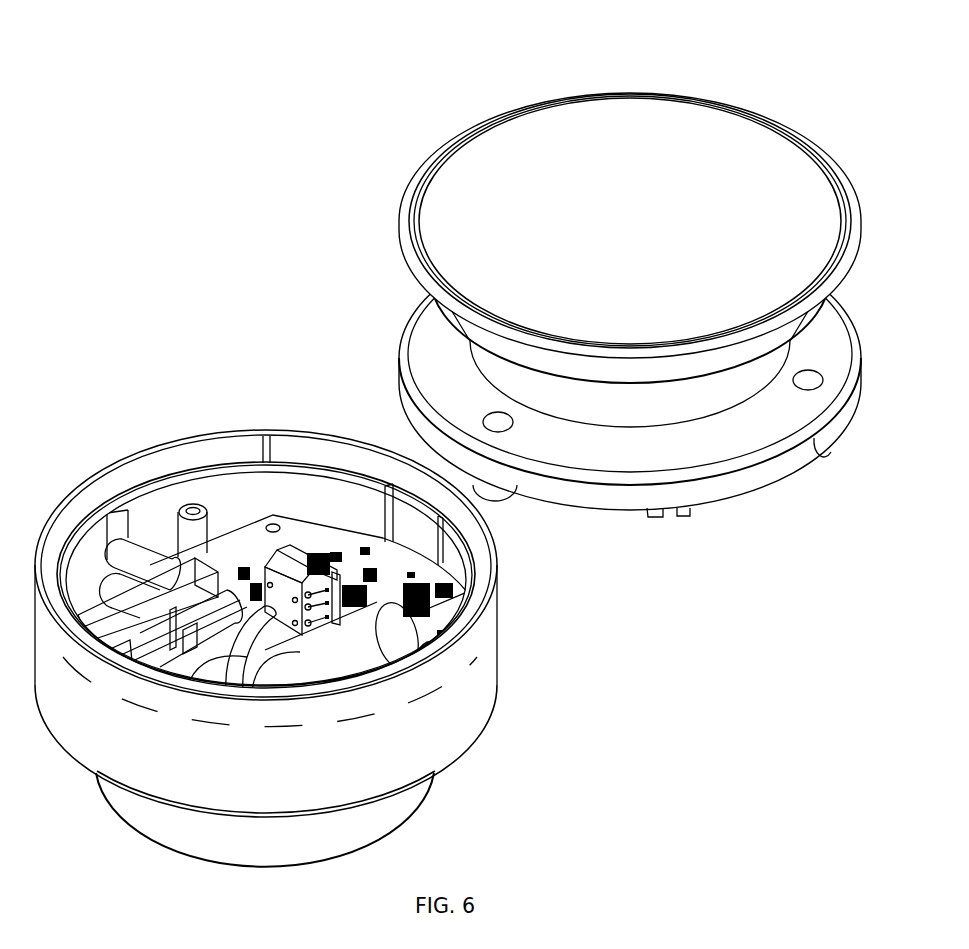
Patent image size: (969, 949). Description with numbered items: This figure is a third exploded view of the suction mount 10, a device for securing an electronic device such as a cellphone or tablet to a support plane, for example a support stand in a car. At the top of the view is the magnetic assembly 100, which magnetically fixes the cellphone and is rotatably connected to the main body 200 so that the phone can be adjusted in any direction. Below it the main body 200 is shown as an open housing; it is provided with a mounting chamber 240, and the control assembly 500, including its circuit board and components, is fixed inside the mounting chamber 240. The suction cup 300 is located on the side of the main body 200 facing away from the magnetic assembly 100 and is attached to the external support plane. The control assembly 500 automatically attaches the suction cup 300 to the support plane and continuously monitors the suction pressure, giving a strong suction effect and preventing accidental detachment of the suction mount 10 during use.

The suction mount 10 is at (166, 80).
The magnetic assembly 100 is at (468, 148).
The main body 200 is at (487, 676).
The mounting chamber 240 is at (226, 474).
The suction cup 300 is at (412, 807).
The control assembly 500 is at (303, 548).